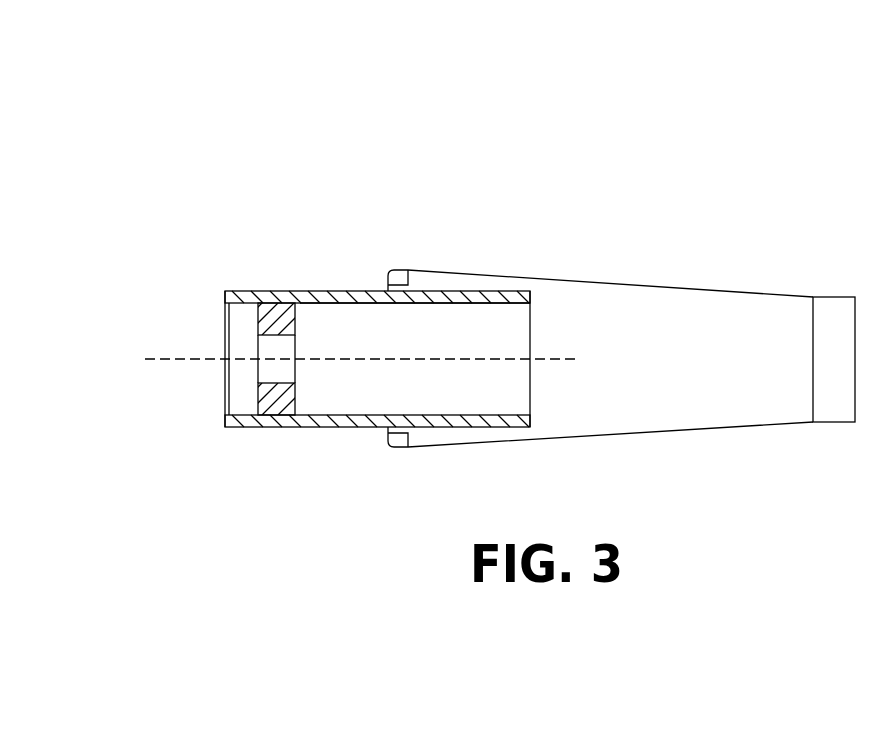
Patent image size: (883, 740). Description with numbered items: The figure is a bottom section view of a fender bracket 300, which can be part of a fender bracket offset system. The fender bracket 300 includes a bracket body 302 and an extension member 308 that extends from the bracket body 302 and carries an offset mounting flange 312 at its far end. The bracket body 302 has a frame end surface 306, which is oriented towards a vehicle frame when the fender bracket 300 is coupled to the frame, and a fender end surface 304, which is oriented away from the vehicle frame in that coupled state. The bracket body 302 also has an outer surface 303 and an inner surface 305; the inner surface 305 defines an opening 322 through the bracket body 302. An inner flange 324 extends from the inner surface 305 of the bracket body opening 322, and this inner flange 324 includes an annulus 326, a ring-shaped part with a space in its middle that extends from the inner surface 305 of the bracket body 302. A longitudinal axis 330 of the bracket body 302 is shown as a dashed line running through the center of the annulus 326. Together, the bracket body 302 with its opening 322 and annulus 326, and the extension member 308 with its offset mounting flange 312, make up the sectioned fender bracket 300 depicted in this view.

The fender bracket 300 is at (284, 90).
The bracket body 302 is at (331, 270).
The outer surface 303 is at (371, 291).
The fender end surface 304 is at (532, 303).
The inner surface 305 is at (337, 303).
The frame end surface 306 is at (225, 417).
The extension member 308 is at (680, 302).
The offset mounting flange 312 is at (838, 296).
The opening 322 is at (520, 395).
The inner flange 324 is at (268, 315).
The annulus 326 is at (268, 347).
The longitudinal axis 330 is at (403, 360).